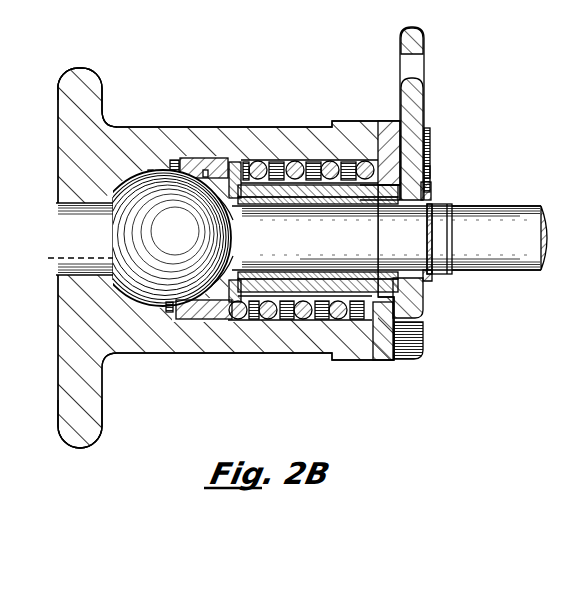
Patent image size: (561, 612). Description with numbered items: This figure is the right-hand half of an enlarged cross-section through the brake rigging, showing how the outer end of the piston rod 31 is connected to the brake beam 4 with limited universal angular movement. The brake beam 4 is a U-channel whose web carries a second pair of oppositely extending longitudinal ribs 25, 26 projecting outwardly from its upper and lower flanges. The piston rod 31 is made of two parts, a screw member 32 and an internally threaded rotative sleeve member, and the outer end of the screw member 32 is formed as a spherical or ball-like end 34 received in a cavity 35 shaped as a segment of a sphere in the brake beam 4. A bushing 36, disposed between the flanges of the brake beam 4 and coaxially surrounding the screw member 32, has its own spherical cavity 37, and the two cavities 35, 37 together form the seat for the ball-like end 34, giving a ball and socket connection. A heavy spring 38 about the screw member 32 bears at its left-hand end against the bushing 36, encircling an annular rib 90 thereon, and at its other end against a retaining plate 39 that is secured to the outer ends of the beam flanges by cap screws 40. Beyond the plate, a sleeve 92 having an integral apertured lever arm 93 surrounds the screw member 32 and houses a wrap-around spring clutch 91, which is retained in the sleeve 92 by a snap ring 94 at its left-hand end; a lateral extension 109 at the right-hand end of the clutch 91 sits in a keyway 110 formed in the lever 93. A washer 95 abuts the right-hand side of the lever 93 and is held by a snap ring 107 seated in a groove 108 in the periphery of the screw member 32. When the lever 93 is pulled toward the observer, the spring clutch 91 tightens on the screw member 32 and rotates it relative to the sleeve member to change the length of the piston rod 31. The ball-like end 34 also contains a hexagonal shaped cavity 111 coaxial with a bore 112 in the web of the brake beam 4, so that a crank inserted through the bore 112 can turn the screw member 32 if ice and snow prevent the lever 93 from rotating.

The brake beam 4 is at (142, 348).
The longitudinal rib 25 is at (98, 90).
The longitudinal rib 26 is at (93, 403).
The piston rod 31 is at (500, 208).
The screw member 32 is at (502, 264).
The spherical or ball-like end 34 is at (192, 167).
The cavity 35 is at (152, 172).
The bushing 36 is at (202, 318).
The cavity 37 is at (206, 171).
The heavy spring 38 is at (298, 166).
The retaining plate 39 is at (382, 343).
The cap screws 40 is at (428, 334).
The annular rib 90 is at (246, 188).
The wrap-around spring clutch 91 is at (317, 292).
The sleeve 92 is at (290, 293).
The lever arm 93 is at (412, 112).
The snap ring 94 is at (247, 292).
The washer 95 is at (423, 284).
The snap ring 107 is at (430, 279).
The groove 108 is at (434, 206).
The lateral extension 109 is at (426, 170).
The keyway 110 is at (426, 188).
The hexagonal shaped cavity 111 is at (96, 238).
The bore 112 is at (75, 205).